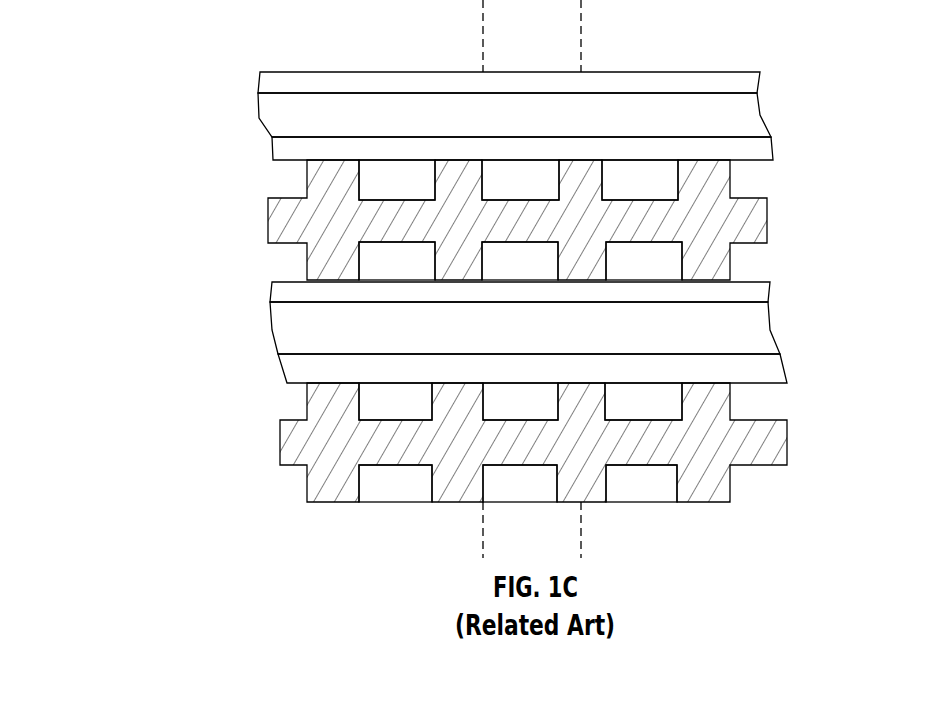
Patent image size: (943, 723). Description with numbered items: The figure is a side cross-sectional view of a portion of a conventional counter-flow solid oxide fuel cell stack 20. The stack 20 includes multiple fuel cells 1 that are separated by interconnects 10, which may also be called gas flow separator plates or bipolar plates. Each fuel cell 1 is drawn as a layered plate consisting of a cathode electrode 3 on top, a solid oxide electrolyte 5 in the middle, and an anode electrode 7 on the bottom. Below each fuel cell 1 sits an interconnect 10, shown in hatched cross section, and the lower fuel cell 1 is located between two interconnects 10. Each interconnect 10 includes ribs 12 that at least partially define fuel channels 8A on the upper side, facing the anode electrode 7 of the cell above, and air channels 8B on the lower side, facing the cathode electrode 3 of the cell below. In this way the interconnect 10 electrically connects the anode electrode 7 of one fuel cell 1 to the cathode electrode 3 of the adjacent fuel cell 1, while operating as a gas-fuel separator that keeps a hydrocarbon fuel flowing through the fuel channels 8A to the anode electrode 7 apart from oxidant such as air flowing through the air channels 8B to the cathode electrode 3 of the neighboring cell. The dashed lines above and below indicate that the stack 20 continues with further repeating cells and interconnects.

The counter-flow solid oxide fuel cell stack 20 is at (140, 176).
The fuel cell 1 is at (522, 224).
The cathode electrode 3 is at (492, 183).
The solid oxide electrolyte 5 is at (497, 223).
The anode electrode 7 is at (795, 380).
The interconnect 10 is at (533, 331).
The ribs 12 is at (307, 487).
The fuel channels 8A is at (413, 196).
The air channels 8B is at (413, 276).